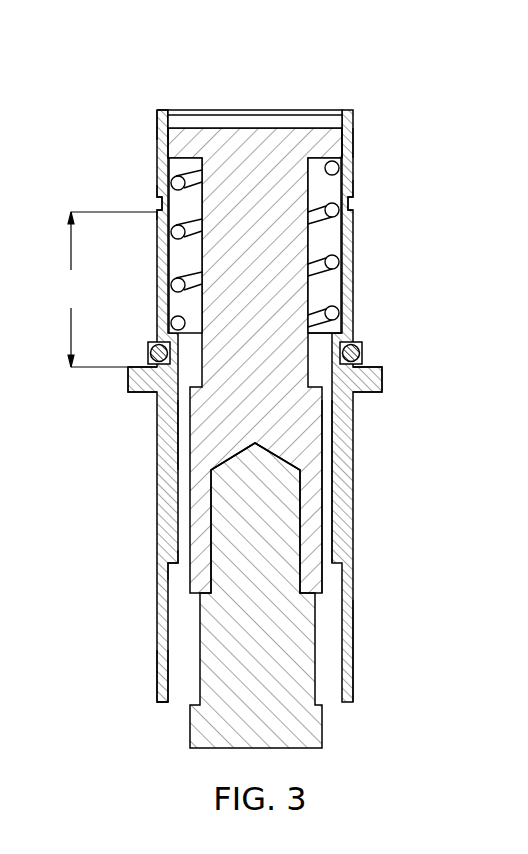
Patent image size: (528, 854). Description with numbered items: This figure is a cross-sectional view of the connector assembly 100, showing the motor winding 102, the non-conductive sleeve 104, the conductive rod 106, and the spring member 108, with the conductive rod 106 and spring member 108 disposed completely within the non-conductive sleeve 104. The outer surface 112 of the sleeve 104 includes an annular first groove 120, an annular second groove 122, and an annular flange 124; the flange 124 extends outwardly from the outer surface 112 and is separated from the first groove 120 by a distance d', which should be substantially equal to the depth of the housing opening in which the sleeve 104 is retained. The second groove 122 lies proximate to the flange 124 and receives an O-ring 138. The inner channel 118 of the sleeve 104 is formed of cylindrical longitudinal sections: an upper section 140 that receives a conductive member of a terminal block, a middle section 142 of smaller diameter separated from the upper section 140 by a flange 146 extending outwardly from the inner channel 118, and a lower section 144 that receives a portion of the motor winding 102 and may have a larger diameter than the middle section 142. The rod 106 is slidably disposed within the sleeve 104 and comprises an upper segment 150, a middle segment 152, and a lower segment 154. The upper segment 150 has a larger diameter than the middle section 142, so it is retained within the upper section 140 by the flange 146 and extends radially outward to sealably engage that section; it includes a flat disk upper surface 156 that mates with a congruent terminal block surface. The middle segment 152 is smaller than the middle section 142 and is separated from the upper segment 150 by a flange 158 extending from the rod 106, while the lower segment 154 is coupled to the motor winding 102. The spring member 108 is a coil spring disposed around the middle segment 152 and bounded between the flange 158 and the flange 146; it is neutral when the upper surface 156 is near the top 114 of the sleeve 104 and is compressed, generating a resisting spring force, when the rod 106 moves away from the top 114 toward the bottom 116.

The connector assembly 100 is at (289, 399).
The motor winding 102 is at (237, 671).
The non-conductive sleeve 104 is at (351, 585).
The conductive rod 106 is at (237, 372).
The spring member 108 is at (337, 263).
The outer surface 112 is at (355, 641).
The top 114 is at (161, 109).
The bottom 116 is at (158, 703).
The inner channel 118 is at (176, 675).
The first groove 120 is at (157, 203).
The second groove 122 is at (151, 354).
The flange 124 is at (383, 367).
The O-ring 138 is at (359, 349).
The upper section 140 is at (349, 181).
The middle section 142 is at (176, 433).
The lower section 144 is at (171, 612).
The flange 146 is at (337, 328).
The upper segment 150 is at (345, 140).
The middle segment 152 is at (341, 236).
The lower segment 154 is at (323, 473).
The upper surface 156 is at (248, 127).
The flange 158 is at (171, 168).